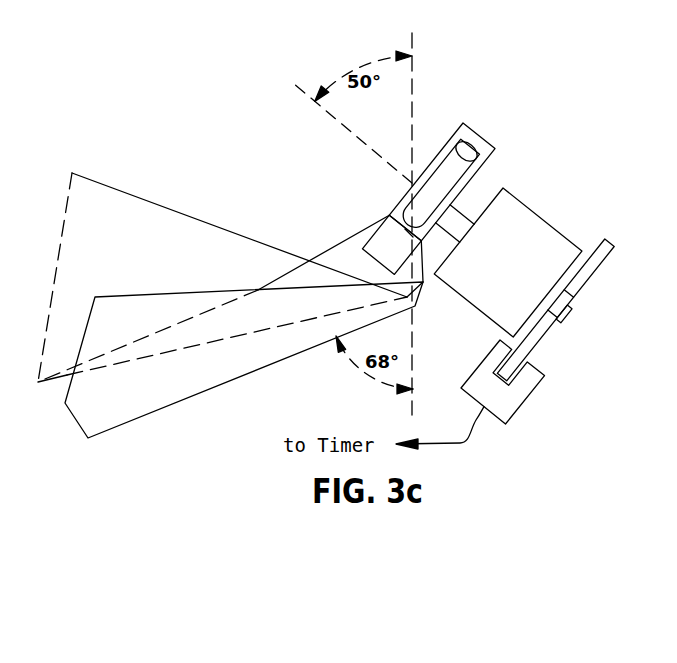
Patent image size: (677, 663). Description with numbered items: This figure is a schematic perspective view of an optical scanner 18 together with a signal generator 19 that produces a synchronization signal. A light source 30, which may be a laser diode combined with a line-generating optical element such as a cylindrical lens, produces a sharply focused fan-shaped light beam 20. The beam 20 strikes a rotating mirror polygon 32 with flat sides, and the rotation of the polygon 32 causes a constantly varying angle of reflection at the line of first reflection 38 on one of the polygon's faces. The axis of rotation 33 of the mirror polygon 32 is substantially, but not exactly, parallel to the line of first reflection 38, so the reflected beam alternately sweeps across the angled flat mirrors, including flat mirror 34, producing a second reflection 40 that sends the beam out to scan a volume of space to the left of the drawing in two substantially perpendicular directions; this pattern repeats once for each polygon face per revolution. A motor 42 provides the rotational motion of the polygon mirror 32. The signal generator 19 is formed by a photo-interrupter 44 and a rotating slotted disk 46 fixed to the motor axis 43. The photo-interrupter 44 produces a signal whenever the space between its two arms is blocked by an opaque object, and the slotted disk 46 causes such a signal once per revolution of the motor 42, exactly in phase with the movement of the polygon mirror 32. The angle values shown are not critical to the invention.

The optical scanner 18 is at (200, 144).
The signal generator 19 is at (541, 337).
The fan-shaped light beam 20 is at (69, 190).
The light source 30 is at (471, 152).
The rotating mirror polygon 32 is at (463, 124).
The axis of rotation 33 is at (327, 118).
The flat mirror 34 is at (182, 399).
The line of first reflection 38 is at (363, 231).
The second reflection 40 is at (173, 353).
The motor 42 is at (545, 222).
The motor axis 43 is at (578, 305).
The photo-interrupter 44 is at (513, 414).
The rotating slotted disk 46 is at (535, 347).